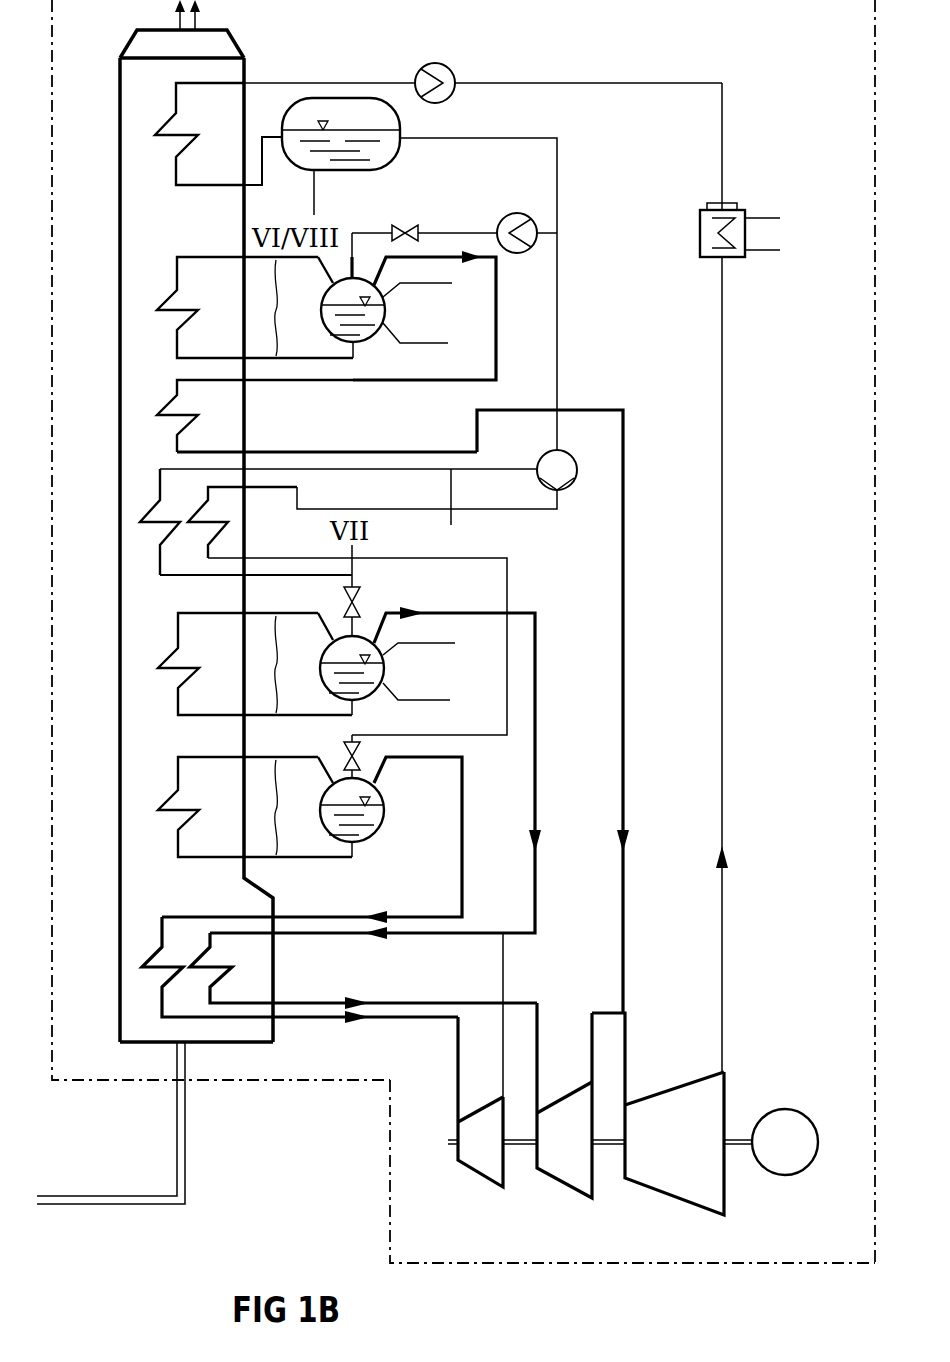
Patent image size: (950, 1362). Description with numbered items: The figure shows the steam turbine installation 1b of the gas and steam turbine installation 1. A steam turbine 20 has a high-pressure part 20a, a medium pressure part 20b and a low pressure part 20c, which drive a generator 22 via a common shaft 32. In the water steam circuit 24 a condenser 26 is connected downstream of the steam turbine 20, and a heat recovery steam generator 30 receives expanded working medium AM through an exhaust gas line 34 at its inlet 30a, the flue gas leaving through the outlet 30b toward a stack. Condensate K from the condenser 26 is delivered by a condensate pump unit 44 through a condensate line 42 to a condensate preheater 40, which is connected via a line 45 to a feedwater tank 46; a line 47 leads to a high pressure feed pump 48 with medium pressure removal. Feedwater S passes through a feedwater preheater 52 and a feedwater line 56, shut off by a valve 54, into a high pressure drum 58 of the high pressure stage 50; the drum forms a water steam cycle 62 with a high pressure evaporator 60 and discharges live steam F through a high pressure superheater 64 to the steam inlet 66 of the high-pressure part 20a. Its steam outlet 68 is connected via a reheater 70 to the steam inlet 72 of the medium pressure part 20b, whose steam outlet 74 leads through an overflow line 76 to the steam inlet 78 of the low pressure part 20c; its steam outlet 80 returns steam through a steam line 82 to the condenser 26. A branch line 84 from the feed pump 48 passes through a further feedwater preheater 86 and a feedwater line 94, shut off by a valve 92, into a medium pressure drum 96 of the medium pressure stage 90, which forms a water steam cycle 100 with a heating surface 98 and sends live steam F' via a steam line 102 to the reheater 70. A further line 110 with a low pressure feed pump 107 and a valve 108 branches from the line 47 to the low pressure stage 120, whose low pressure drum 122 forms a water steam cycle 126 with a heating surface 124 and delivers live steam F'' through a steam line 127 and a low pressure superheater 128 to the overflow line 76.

The gas and steam turbine installation 1 is at (412, 1265).
The steam turbine installation 1b is at (611, 1262).
The steam turbine 20 is at (738, 1210).
The high-pressure part 20a is at (475, 1158).
The medium pressure part 20b is at (555, 1170).
The low pressure part 20c is at (680, 1170).
The generator 22 is at (785, 1109).
The water steam circuit 24 is at (722, 176).
The condenser 26 is at (700, 240).
The heat recovery steam generator 30 is at (120, 800).
The inlet 30a is at (243, 1046).
The outlet 30b is at (124, 50).
The common shaft 32 is at (608, 1148).
The exhaust gas line 34 is at (176, 1152).
The condensate preheater 40 is at (176, 172).
The condensate line 42 is at (324, 82).
The condensate pump unit 44 is at (436, 62).
The line 45 is at (262, 138).
The feedwater tank 46 is at (400, 122).
The line 47 is at (530, 136).
The high pressure feed pump 48 is at (568, 458).
The high pressure stage 50 is at (161, 889).
The feedwater preheater 52 is at (192, 528).
The valve 54 is at (345, 754).
The feedwater line 56 is at (508, 583).
The high pressure drum 58 is at (385, 810).
The high pressure evaporator 60 is at (157, 810).
The water steam cycle 62 is at (274, 807).
The high pressure superheater 64 is at (152, 968).
The steam inlet 66 is at (458, 1122).
The steam outlet 68 is at (501, 1097).
The reheater 70 is at (207, 985).
The steam inlet 72 is at (537, 1113).
The steam outlet 74 is at (592, 1085).
The overflow line 76 is at (610, 1013).
The steam inlet 78 is at (626, 1105).
The steam outlet 80 is at (712, 1075).
The steam line 82 is at (724, 600).
The branch line 84 is at (312, 469).
The further feedwater preheater 86 is at (150, 522).
The medium pressure stage 90 is at (164, 631).
The valve 92 is at (360, 600).
The feedwater line 94 is at (270, 575).
The medium pressure drum 96 is at (385, 668).
The heating surface 98 is at (157, 668).
The water steam cycle 100 is at (277, 664).
The steam line 102 is at (537, 725).
The low pressure feed pump 107 is at (525, 218).
The valve 108 is at (405, 227).
The further line 110 is at (440, 232).
The low pressure stage 120 is at (170, 276).
The low pressure drum 122 is at (388, 310).
The heating surface 124 is at (157, 310).
The water steam cycle 126 is at (277, 308).
The steam line 127 is at (372, 382).
The low pressure superheater 128 is at (157, 415).